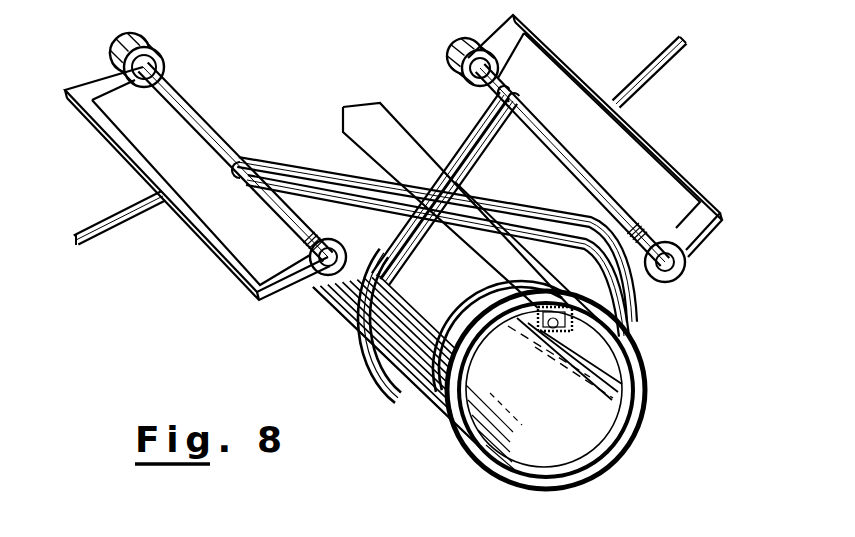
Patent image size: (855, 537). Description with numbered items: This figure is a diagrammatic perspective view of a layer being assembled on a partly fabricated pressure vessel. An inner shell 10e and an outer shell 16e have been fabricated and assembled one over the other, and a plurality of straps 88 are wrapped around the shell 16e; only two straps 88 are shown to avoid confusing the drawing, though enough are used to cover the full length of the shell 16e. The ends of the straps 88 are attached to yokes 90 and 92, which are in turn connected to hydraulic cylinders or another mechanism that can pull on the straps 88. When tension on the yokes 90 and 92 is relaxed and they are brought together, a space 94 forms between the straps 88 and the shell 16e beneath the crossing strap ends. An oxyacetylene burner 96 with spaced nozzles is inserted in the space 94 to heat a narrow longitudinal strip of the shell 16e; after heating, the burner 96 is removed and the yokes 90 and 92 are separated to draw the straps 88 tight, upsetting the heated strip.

The straps 88 is at (262, 168).
The yoke 90 is at (705, 238).
The yoke 92 is at (280, 298).
The space 94 is at (437, 230).
The oxyacetylene burner 96 is at (523, 313).
The shell 10e is at (523, 467).
The shell 16e is at (632, 422).